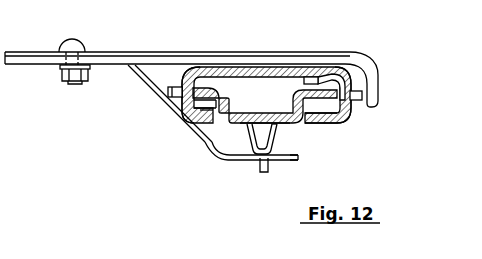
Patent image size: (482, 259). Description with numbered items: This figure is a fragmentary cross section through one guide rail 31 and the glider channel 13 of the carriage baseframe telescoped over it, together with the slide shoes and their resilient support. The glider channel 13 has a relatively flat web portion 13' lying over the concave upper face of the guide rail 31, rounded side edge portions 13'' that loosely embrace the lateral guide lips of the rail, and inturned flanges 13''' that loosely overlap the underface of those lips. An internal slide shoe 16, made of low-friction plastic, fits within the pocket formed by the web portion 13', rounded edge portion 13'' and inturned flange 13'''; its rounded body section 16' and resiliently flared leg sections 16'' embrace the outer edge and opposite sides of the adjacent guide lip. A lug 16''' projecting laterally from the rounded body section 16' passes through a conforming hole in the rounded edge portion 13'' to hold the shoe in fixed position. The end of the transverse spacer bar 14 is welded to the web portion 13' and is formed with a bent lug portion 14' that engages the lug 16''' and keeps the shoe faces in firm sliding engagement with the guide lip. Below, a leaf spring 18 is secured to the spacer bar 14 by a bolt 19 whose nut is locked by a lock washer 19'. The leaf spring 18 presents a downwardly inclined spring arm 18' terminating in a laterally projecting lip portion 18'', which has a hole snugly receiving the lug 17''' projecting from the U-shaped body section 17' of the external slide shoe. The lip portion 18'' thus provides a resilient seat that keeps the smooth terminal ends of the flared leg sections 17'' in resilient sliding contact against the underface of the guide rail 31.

The upper spacer bar 14 is at (177, 33).
The bent lug portion 14' is at (407, 79).
The bolt 19 is at (87, 39).
The lock washer 19' is at (89, 82).
The leaf spring 18 is at (248, 174).
The downwardly inclined spring arm 18' is at (147, 103).
The lip portion 18'' is at (325, 168).
The glider channel 13 is at (266, 71).
The flat web portion 13' is at (265, 71).
The rounded side edge portion 13'' is at (288, 71).
The inturned flange 13''' is at (343, 129).
The guide rail 31 is at (236, 124).
The internal slide shoe 16 is at (183, 134).
The rounded body section 16' is at (246, 91).
The resiliently flared leg sections 16'' is at (252, 105).
The lug 16''' is at (261, 83).
The U-shaped body section 17' is at (252, 160).
The resiliently flared leg sections 17'' is at (307, 139).
The lug 17''' is at (286, 172).